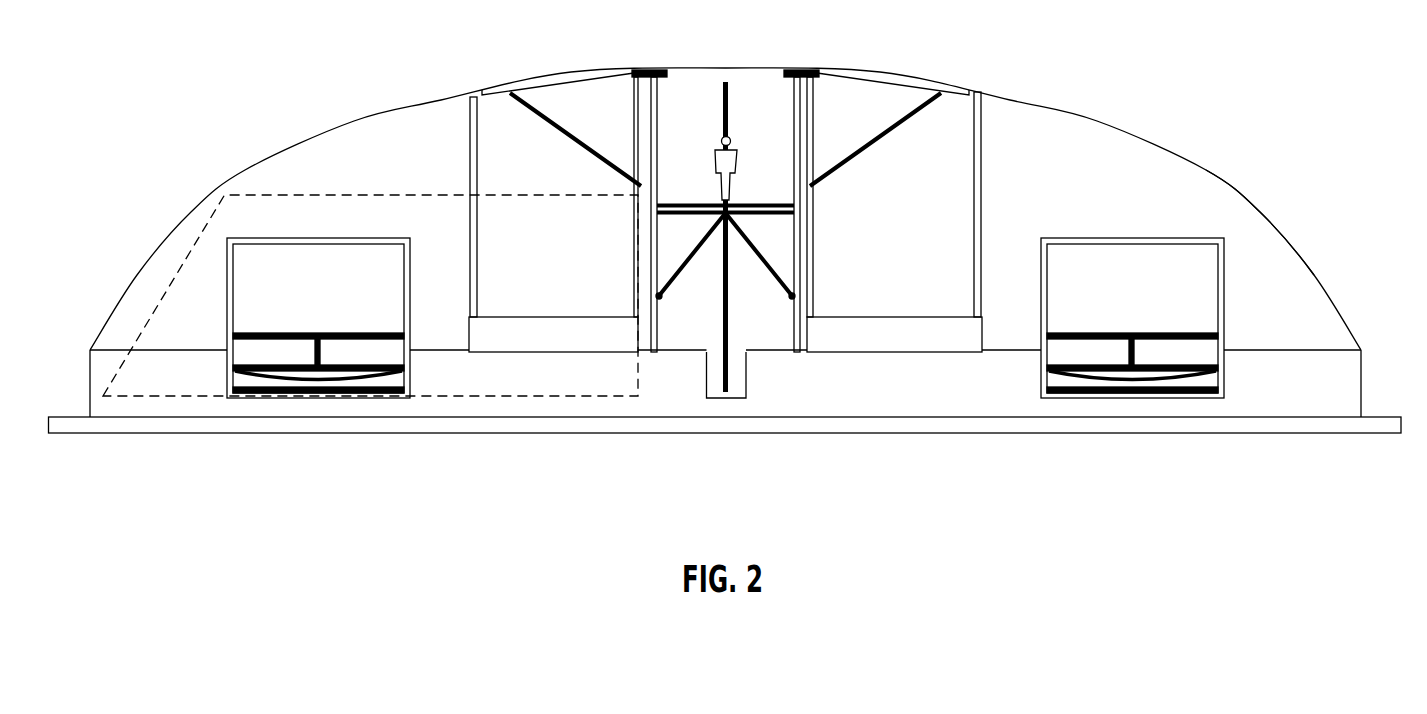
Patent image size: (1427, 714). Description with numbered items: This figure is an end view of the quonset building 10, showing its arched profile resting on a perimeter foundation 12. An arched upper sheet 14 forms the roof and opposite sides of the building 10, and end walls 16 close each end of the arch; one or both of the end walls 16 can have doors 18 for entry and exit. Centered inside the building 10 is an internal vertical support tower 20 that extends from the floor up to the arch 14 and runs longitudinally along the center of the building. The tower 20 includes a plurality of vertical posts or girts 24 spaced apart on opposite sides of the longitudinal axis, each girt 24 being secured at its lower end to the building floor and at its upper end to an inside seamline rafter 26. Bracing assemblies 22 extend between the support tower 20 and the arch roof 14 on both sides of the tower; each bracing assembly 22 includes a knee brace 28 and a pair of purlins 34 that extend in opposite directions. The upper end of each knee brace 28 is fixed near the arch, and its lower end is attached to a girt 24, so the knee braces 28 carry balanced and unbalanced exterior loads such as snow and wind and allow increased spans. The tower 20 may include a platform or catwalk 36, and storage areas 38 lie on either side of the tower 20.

The quonset building 10 is at (1085, 76).
The perimeter foundation 12 is at (1347, 382).
The arched upper sheet 14 is at (1207, 170).
The end walls 16 is at (1236, 210).
The doors 18 is at (247, 320).
The internal vertical support tower 20 is at (659, 121).
The bracing assemblies 22 is at (575, 127).
The vertical posts or girts 24 is at (659, 101).
The inside seamline rafter 26 is at (661, 71).
The knee brace 28 is at (580, 147).
The purlins 34 is at (507, 86).
The platform or catwalk 36 is at (693, 202).
The storage areas 38 is at (318, 215).